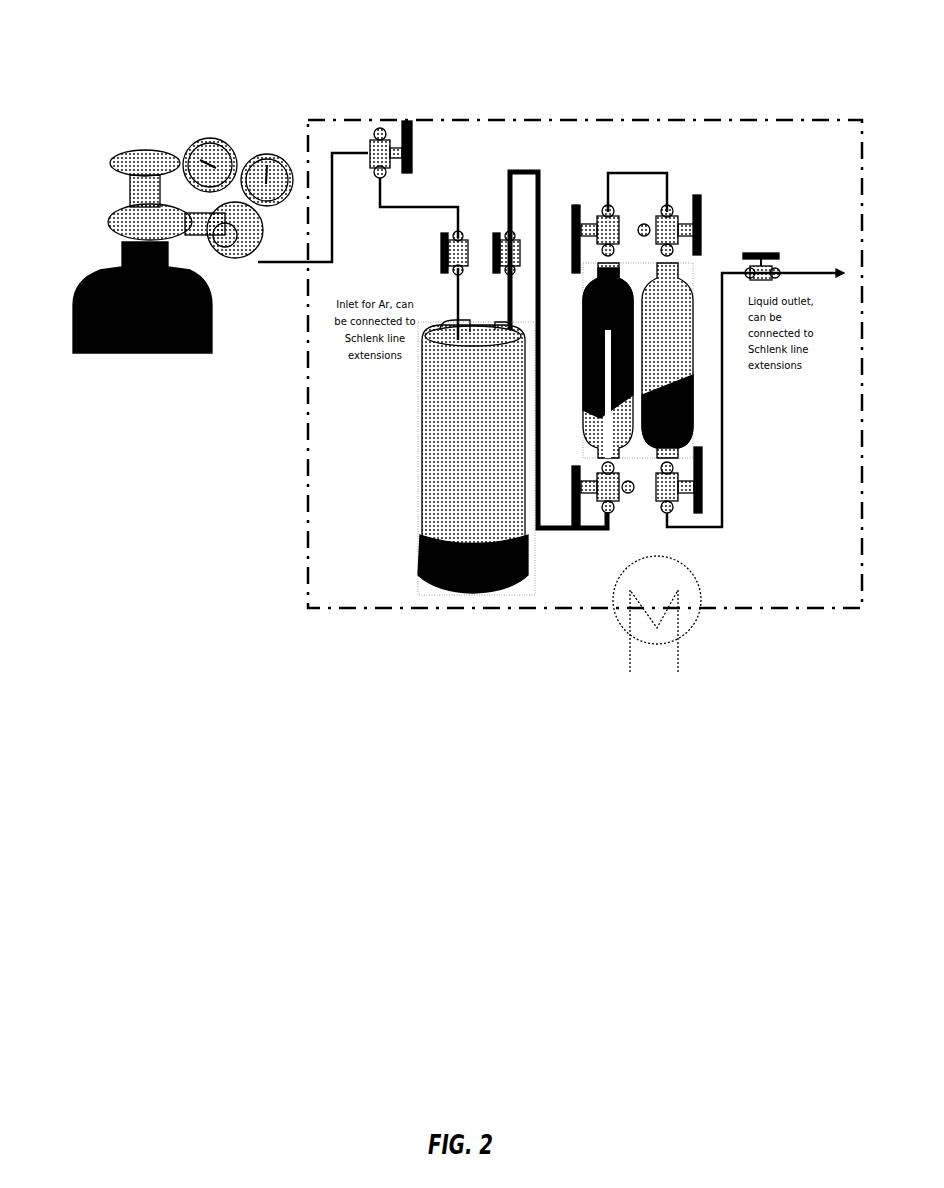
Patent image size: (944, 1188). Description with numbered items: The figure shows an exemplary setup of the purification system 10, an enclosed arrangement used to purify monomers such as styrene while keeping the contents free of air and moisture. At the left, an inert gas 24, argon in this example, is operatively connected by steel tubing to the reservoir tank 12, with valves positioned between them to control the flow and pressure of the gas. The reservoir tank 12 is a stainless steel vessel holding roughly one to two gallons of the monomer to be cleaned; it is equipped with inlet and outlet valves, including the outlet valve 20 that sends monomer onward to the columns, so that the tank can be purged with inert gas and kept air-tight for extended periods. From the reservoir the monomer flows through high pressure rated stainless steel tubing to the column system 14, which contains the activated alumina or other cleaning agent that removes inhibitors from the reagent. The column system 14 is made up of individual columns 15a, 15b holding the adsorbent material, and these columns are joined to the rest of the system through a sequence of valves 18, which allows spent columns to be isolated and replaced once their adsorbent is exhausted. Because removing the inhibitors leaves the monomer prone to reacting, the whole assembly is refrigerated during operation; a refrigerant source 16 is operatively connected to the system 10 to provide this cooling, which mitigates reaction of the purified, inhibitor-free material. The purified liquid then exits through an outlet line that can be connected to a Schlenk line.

The purification system 10 is at (215, 58).
The inert gas 24 is at (114, 262).
The valves 18 is at (442, 253).
The outlet valve 20 is at (505, 240).
The reservoir tank 12 is at (416, 448).
The column system 14 is at (677, 331).
The column 15a is at (620, 410).
The column 15b is at (693, 375).
The refrigerant source 16 is at (690, 633).